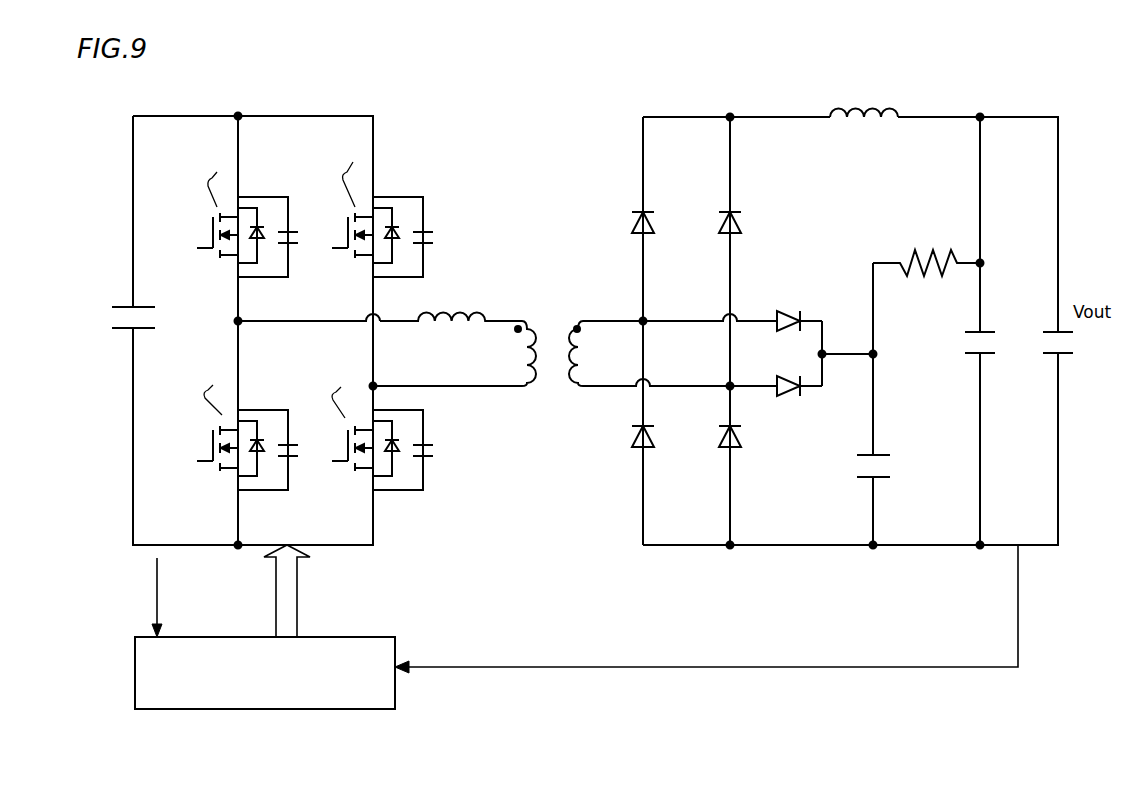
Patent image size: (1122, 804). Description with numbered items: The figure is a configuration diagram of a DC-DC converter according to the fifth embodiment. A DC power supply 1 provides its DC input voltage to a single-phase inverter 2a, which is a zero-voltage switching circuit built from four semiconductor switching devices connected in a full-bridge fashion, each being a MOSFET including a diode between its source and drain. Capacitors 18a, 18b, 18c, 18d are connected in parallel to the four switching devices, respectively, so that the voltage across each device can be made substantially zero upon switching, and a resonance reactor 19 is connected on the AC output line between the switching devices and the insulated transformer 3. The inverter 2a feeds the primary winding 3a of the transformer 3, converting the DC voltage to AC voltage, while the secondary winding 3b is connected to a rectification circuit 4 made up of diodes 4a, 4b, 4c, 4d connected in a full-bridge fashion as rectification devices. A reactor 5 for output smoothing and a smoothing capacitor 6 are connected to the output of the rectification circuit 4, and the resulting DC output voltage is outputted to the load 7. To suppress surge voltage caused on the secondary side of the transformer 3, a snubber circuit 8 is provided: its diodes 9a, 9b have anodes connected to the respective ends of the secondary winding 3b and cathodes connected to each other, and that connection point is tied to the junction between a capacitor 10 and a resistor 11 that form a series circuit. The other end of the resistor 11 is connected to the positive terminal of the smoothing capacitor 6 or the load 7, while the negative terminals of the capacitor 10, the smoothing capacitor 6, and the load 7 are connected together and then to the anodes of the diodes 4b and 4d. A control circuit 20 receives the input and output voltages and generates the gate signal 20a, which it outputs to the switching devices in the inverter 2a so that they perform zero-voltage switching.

The DC power supply 1 is at (113, 338).
The single-phase inverter 2a is at (306, 288).
The insulated transformer 3 is at (551, 355).
The primary winding 3a is at (532, 397).
The secondary winding 3b is at (572, 397).
The rectification circuit 4 is at (691, 290).
The diode 4a is at (622, 207).
The diode 4b is at (627, 455).
The diode 4c is at (753, 220).
The diode 4d is at (723, 455).
The reactor 5 is at (843, 90).
The smoothing capacitor 6 is at (997, 320).
The load 7 is at (1073, 370).
The snubber circuit 8 is at (880, 388).
The diode 9a is at (788, 313).
The diode 9b is at (792, 405).
The capacitor 10 is at (883, 448).
The resistor 11 is at (922, 243).
The capacitor 18a is at (297, 217).
The capacitor 18b is at (297, 462).
The capacitor 18c is at (432, 222).
The capacitor 18d is at (435, 462).
The resonance reactor 19 is at (478, 295).
The control circuit 20 is at (383, 638).
The gate signal 20a is at (298, 592).